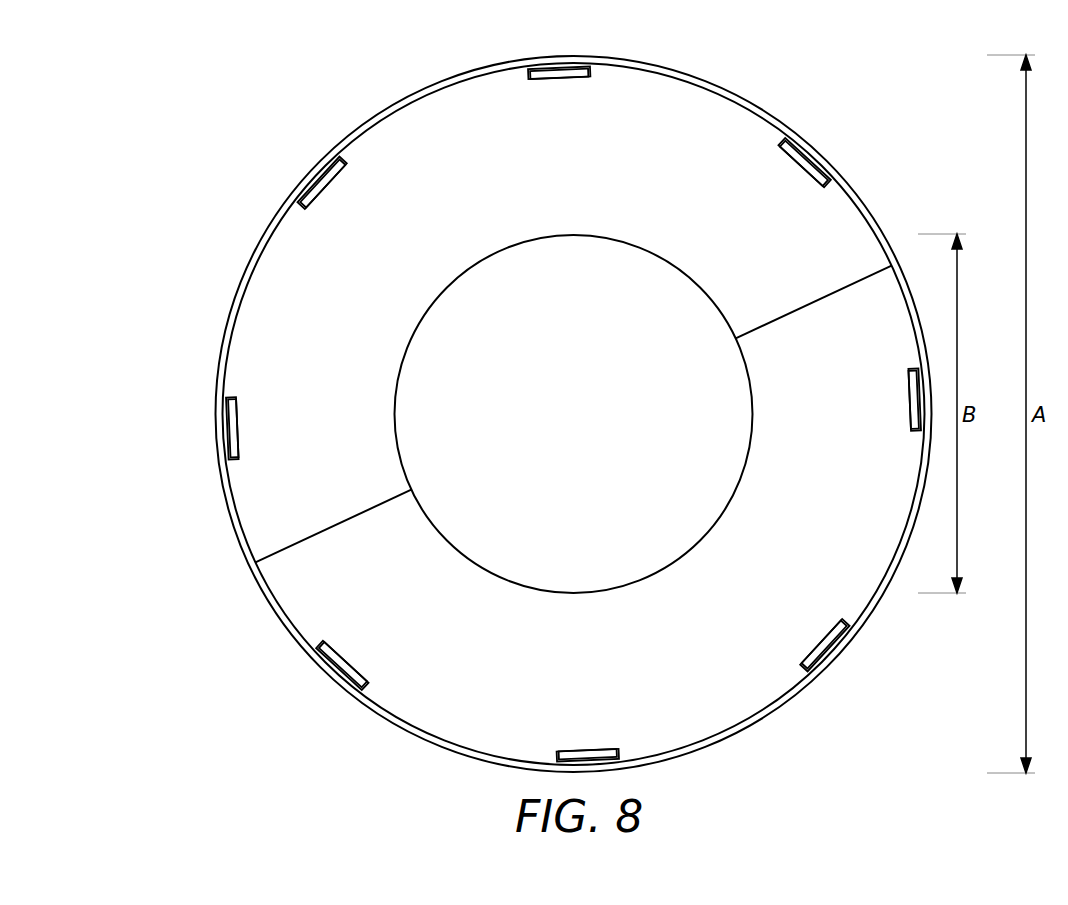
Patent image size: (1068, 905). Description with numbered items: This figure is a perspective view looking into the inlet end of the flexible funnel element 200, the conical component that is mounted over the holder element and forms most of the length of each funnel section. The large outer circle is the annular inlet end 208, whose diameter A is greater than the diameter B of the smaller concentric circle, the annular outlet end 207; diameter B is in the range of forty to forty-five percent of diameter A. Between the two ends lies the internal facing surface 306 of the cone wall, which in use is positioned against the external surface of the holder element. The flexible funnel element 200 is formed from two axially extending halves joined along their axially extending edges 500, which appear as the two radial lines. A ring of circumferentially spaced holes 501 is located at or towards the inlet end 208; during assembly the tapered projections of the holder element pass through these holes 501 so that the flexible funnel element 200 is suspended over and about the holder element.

The flexible funnel element 200 is at (214, 230).
The annular inlet end 208 is at (700, 83).
The annular outlet end 207 is at (641, 250).
The axially extending edges 500 is at (344, 522).
The holes 501 is at (558, 72).
The internal facing surface 306 is at (477, 176).